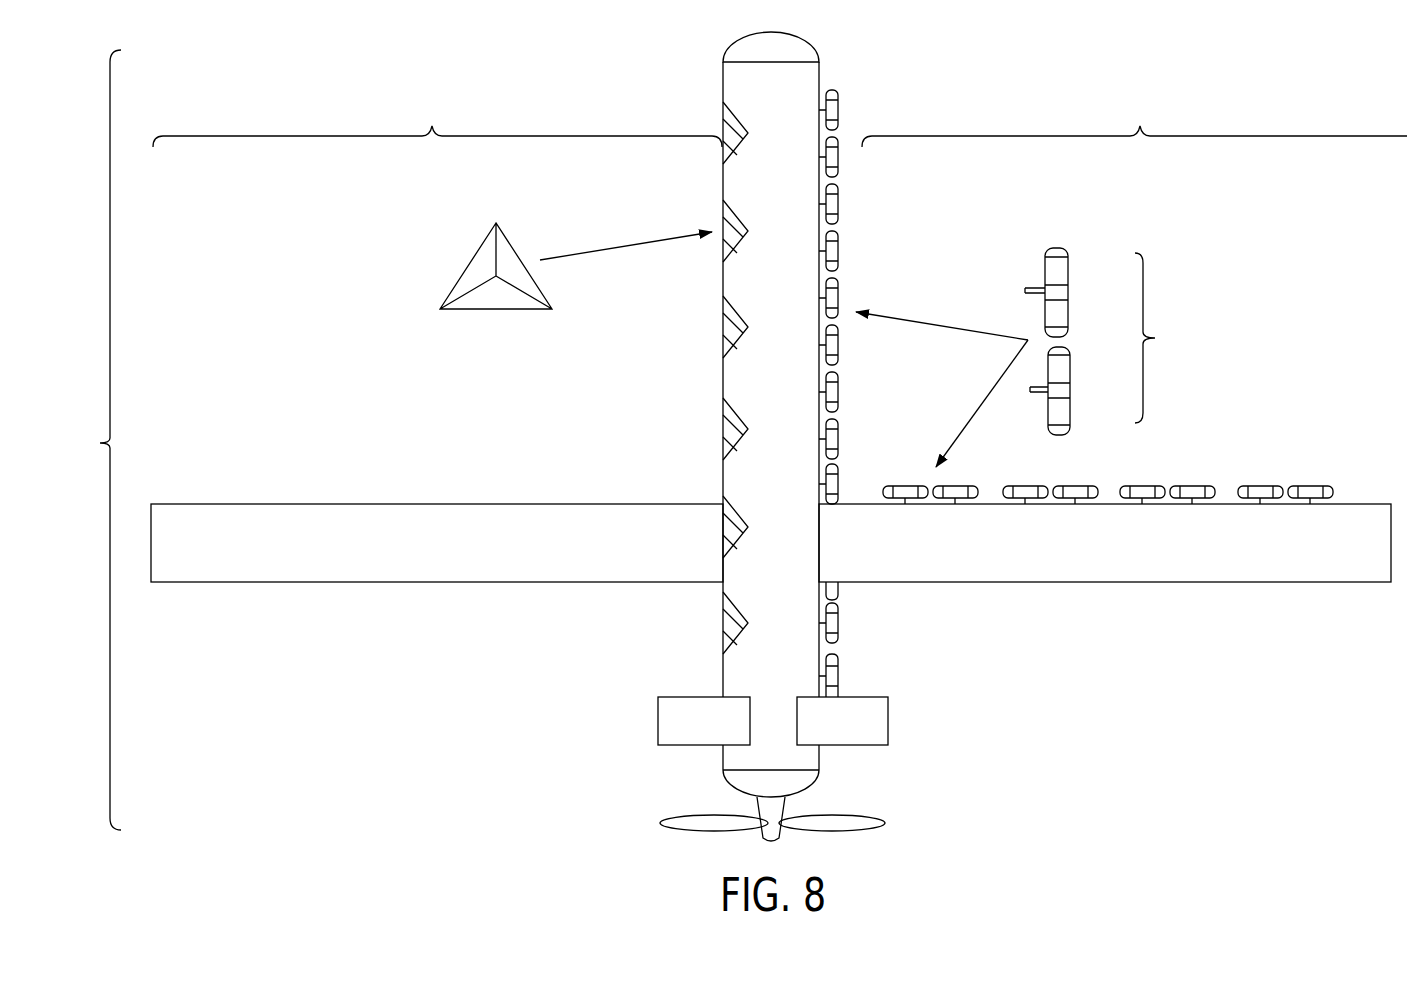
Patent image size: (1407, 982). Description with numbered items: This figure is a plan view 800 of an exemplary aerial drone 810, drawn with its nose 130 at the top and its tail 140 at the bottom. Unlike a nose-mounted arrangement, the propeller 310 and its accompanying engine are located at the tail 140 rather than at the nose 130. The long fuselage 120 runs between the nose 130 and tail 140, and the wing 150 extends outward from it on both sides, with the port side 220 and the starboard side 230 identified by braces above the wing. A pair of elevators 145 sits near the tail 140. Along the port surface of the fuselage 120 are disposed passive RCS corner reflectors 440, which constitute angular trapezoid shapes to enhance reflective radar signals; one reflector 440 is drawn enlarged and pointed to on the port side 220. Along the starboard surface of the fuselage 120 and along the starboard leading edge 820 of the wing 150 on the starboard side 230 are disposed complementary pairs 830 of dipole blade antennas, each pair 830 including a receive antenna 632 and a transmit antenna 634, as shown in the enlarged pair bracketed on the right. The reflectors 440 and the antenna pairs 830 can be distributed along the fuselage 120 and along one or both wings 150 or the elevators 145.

The plan view 800 is at (297, 92).
The drone 810 is at (92, 440).
The port side 220 is at (437, 116).
The starboard side 230 is at (1134, 116).
The nose 130 is at (810, 43).
The fuselage 120 is at (796, 397).
The passive RCS corner reflectors 440 is at (468, 262).
The wing 150 is at (400, 559).
The elevators 145 is at (718, 737).
The tail 140 is at (745, 778).
The propeller 310 is at (860, 817).
The receive antenna 632 is at (1060, 248).
The transmit antenna 634 is at (1045, 410).
The complementary pairs of dipole blade antennas 830 is at (1024, 360).
The starboard leading edge 820 is at (1369, 500).